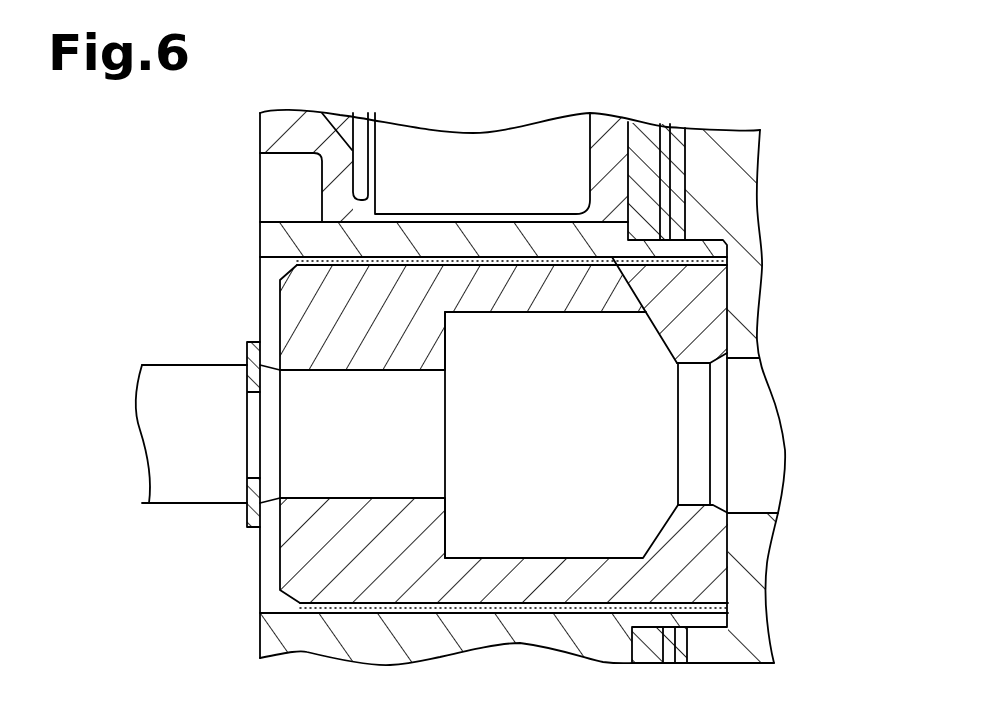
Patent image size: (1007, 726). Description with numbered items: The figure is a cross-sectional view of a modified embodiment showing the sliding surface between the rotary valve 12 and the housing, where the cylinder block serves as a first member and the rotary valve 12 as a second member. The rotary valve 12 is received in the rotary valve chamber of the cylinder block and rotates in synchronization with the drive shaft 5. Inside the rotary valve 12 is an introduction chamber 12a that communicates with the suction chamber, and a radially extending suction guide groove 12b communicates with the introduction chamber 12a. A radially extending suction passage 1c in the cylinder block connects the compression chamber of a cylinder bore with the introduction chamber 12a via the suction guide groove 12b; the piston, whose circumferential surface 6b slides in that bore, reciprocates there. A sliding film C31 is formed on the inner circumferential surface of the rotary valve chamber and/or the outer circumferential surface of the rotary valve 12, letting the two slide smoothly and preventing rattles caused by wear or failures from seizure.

The suction passage 1c is at (545, 228).
The drive shaft 5 is at (206, 448).
The circumferential surface of the piston 6b is at (423, 229).
The rotary valve 12 is at (405, 318).
The introduction chamber 12a is at (577, 453).
The suction guide groove 12b is at (627, 301).
The sliding film C31 is at (457, 262).